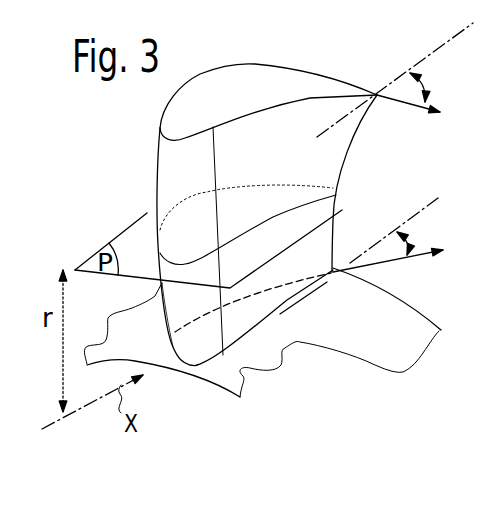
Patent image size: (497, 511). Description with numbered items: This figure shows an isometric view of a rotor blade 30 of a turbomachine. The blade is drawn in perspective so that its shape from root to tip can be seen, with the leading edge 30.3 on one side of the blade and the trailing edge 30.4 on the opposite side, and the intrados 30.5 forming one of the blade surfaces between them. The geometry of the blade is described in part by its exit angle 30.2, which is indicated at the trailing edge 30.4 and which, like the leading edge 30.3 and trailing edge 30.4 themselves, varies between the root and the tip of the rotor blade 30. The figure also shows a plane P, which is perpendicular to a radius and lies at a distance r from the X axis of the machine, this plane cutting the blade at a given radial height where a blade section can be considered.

The rotor blade 30 is at (140, 172).
The exit angle 30.2 is at (395, 147).
The leading edge 30.3 is at (163, 337).
The trailing edge 30.4 is at (343, 178).
The intrados 30.5 is at (285, 163).